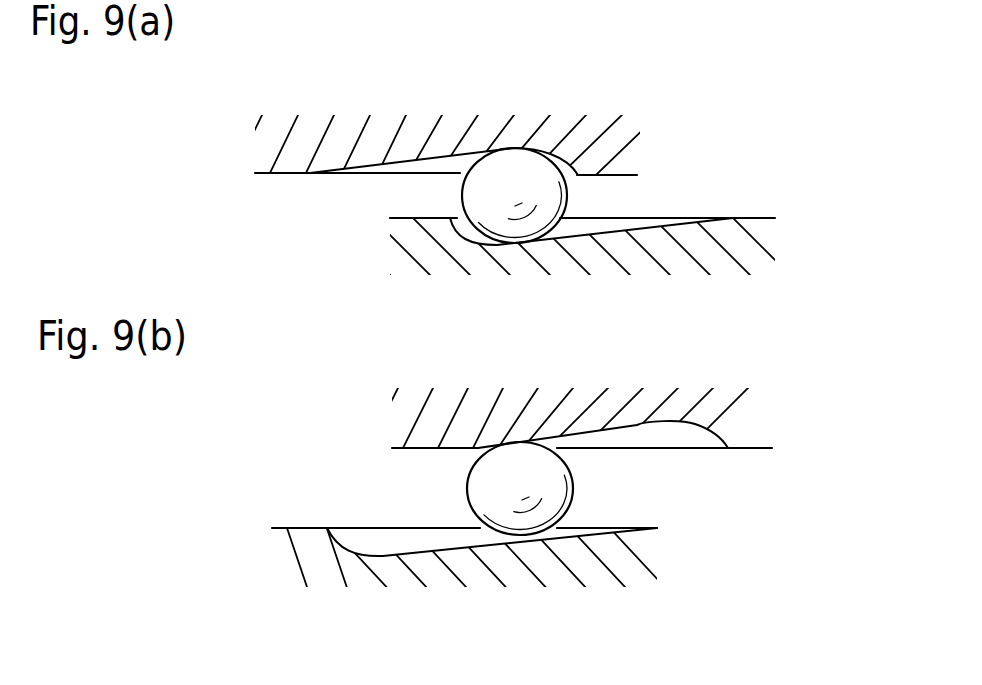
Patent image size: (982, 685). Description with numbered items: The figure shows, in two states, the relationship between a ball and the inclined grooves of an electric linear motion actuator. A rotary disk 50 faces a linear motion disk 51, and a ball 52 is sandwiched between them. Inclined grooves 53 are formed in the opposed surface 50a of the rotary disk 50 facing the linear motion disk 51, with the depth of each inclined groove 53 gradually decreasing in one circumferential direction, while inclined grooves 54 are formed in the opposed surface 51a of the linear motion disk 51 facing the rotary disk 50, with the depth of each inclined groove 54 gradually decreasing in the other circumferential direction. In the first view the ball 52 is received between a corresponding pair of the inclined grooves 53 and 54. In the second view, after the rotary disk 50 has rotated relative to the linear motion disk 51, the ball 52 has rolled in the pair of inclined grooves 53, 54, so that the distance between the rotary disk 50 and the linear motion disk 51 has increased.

In FIG. 9A, the rotary disk 50 is at (273, 138).
In FIG. 9B, the rotary disk 50 is at (412, 413).
In FIG. 9A, the opposed surface of the rotary disk 50a is at (636, 172).
In FIG. 9A, the linear motion disk 51 is at (407, 244).
In FIG. 9B, the linear motion disk 51 is at (295, 556).
In FIG. 9A, the opposed surface of the linear motion disk 51a is at (750, 217).
In FIG. 9A, the ball 52 is at (506, 167).
In FIG. 9B, the ball 52 is at (510, 458).
In FIG. 9A, the inclined groove 53 is at (426, 160).
In FIG. 9B, the inclined groove 53 is at (641, 435).
In FIG. 9A, the inclined groove 54 is at (625, 220).
In FIG. 9B, the inclined groove 54 is at (435, 546).